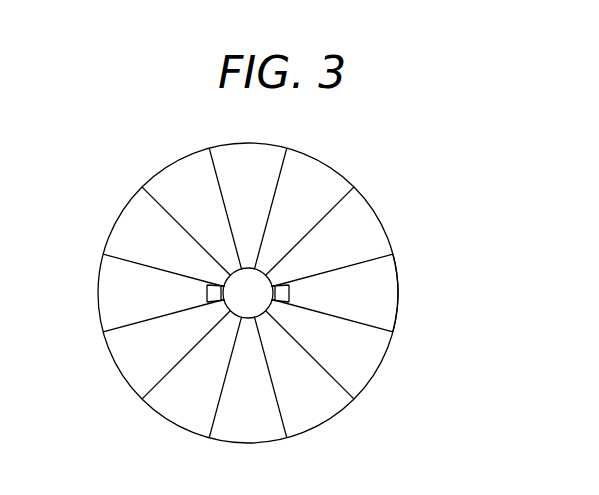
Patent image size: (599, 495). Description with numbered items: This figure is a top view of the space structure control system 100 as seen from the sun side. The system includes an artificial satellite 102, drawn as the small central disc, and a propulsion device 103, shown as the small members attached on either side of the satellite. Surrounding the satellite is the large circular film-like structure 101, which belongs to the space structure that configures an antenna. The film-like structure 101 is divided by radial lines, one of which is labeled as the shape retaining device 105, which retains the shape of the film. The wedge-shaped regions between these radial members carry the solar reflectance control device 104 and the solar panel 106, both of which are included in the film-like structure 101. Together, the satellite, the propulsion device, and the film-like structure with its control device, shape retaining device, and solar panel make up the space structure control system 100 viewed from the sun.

The space structure control system 100 is at (153, 128).
The film-like structure 101 is at (338, 175).
The artificial satellite 102 is at (230, 283).
The propulsion device 103 is at (205, 294).
The solar reflectance control device 104 is at (406, 293).
The shape retaining device 105 is at (375, 260).
The solar panel 106 is at (373, 305).